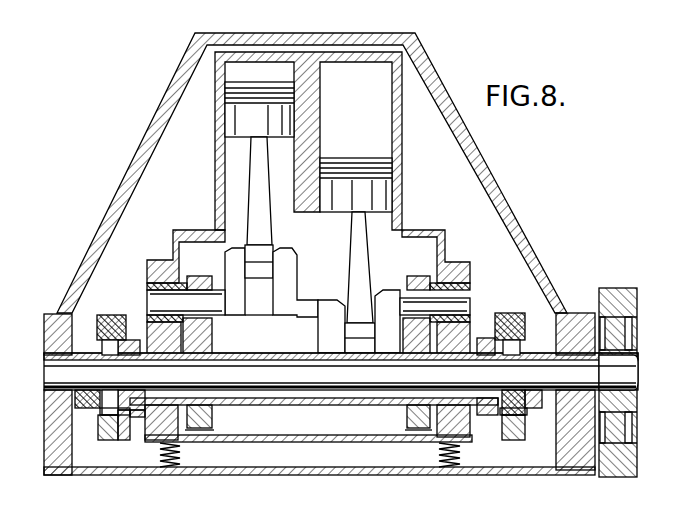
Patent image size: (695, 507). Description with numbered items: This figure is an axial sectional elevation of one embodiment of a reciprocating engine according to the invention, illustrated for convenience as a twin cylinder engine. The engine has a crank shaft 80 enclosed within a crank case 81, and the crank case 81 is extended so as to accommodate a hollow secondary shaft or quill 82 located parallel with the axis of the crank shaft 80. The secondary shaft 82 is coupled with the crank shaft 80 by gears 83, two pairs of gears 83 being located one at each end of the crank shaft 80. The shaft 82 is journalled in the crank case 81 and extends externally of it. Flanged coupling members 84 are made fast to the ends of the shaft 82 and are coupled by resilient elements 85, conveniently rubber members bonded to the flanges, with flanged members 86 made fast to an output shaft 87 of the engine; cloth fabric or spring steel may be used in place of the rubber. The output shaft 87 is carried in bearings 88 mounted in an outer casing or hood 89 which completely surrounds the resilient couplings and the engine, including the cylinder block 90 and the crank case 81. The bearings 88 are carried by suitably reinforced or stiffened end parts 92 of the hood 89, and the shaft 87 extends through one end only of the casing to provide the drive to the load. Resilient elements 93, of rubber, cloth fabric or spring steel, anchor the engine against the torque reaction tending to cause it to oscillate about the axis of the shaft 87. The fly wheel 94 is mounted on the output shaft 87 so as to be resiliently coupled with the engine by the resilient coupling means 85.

The crank shaft 80 is at (387, 303).
The crank case 81 is at (455, 266).
The hollow secondary shaft 82 is at (248, 404).
The gears 83 is at (195, 284).
The flanged coupling members 84 is at (137, 418).
The resilient elements 85 is at (124, 432).
The flanged members 86 is at (95, 316).
The output shaft 87 is at (258, 354).
The bearings 88 is at (576, 301).
The outer casing or hood 89 is at (167, 96).
The cylinder block 90 is at (380, 105).
The end parts 92 is at (60, 470).
The resilient elements 93 is at (172, 470).
The fly wheel 94 is at (616, 470).